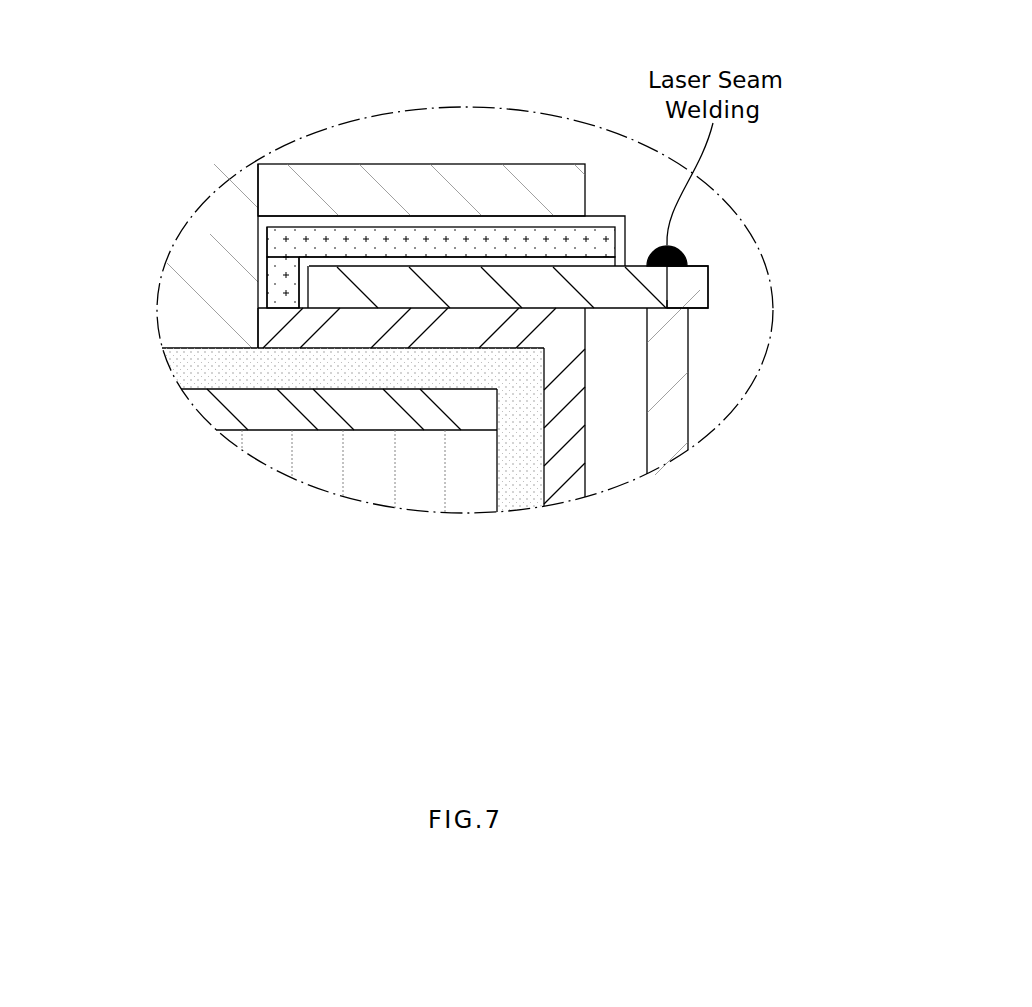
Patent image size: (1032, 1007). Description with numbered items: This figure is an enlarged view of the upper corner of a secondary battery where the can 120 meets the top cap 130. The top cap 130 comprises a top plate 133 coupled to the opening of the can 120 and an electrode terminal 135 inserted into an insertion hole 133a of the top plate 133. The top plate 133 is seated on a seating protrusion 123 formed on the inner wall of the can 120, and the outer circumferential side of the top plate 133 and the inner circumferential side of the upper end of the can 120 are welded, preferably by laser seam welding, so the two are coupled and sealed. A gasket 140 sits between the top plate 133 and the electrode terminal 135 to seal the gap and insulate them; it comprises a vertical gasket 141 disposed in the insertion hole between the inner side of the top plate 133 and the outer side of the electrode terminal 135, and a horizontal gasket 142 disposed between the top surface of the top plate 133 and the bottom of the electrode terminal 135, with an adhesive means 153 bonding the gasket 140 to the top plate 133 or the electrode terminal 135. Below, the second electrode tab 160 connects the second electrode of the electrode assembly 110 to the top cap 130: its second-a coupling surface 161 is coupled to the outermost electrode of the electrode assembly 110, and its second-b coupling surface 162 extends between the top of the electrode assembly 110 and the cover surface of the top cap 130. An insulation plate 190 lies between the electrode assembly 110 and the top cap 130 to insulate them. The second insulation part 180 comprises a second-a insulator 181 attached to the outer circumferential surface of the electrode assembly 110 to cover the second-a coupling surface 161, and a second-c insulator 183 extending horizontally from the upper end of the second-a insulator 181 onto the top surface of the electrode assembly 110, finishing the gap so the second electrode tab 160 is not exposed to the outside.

The electrode assembly 110 is at (278, 449).
The can 120 is at (700, 283).
The seating protrusion 123 is at (665, 305).
The top cap 130 is at (389, 176).
The top plate 133 is at (475, 287).
The insertion hole 133a is at (308, 288).
The electrode terminal 135 is at (397, 193).
The gasket 140 is at (321, 246).
The vertical gasket 141 is at (283, 278).
The horizontal gasket 142 is at (327, 238).
The adhesive means 153 is at (613, 263).
The second electrode tab 160 is at (353, 489).
The second-a coupling surface 161 is at (518, 483).
The second-b coupling surface 162 is at (367, 365).
The second insulation part 180 is at (540, 407).
The second-a insulator 181 is at (567, 433).
The second-c insulator 183 is at (503, 335).
The insulation plate 190 is at (237, 406).